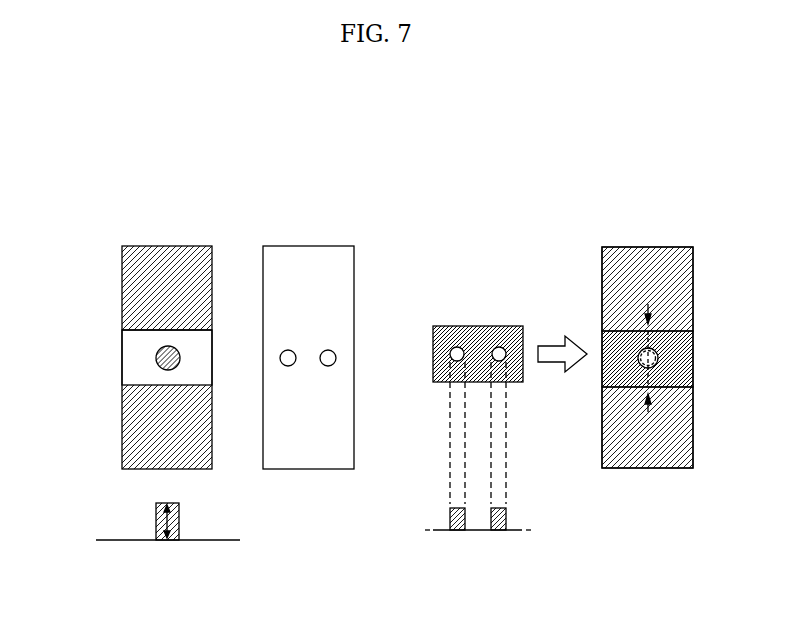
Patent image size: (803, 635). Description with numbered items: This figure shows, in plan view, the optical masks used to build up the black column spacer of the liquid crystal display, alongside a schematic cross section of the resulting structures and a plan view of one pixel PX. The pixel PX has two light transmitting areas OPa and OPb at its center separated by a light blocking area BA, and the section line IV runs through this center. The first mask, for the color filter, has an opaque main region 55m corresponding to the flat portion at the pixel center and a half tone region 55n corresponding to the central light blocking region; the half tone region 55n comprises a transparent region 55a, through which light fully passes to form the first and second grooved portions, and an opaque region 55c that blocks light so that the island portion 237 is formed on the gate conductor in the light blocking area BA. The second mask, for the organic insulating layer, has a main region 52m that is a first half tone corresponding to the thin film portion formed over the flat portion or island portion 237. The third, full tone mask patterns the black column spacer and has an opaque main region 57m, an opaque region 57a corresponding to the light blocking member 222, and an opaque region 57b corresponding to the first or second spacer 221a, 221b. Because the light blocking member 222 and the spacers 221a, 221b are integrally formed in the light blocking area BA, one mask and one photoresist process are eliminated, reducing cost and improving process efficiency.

The main region 55m is at (163, 246).
The half tone region 55n is at (68, 332).
The transparent region 55a is at (128, 343).
The opaque region 55c is at (156, 359).
The main region 52m is at (343, 279).
The main region 57m is at (473, 326).
The opaque region 57a is at (450, 354).
The opaque region 57b is at (501, 346).
The island portion 237 is at (180, 519).
The first spacer 221a is at (458, 531).
The second spacer 221b is at (454, 546).
The light blocking member 222 is at (501, 531).
The pixel PX is at (644, 237).
The light transmitting area OPa is at (647, 289).
The light transmitting area OPb is at (647, 427).
The section line IV is at (647, 357).
The light blocking area BA is at (695, 358).